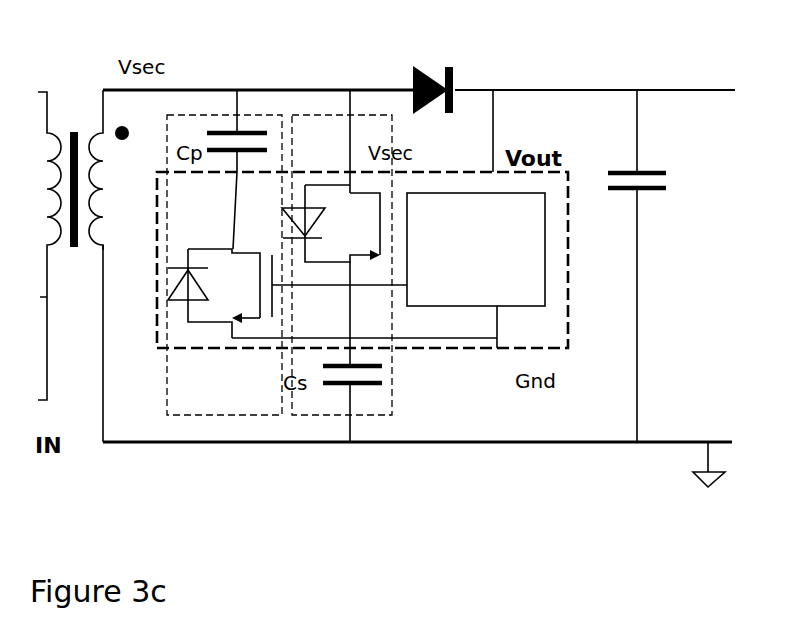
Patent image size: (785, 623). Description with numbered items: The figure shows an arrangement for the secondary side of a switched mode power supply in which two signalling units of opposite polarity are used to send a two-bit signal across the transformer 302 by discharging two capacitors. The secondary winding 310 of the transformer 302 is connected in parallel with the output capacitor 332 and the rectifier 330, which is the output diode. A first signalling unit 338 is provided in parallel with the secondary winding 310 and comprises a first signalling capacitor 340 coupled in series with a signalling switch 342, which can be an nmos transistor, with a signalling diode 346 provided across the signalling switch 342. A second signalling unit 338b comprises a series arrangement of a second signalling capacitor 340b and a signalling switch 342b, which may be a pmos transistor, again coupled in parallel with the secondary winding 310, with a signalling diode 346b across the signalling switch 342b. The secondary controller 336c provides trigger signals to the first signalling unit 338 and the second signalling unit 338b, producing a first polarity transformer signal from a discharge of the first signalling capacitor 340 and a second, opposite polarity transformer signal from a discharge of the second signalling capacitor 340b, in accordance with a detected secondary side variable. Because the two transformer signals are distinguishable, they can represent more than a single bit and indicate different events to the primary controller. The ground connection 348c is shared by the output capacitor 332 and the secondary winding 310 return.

The transformer 302 is at (68, 113).
The secondary winding 310 is at (102, 247).
The rectifier 330 is at (455, 88).
The output capacitor 332 is at (637, 171).
The secondary controller 336c is at (545, 258).
The first signalling unit 338 is at (170, 418).
The second signalling unit 338b is at (310, 113).
The first signalling capacitor 340 is at (210, 133).
The second signalling capacitor 340b is at (332, 385).
The signalling switch 342 is at (252, 404).
The signalling switch 342b is at (351, 293).
The signalling diode 346 is at (182, 303).
The signalling diode 346b is at (300, 207).
The ground node 348c is at (497, 350).